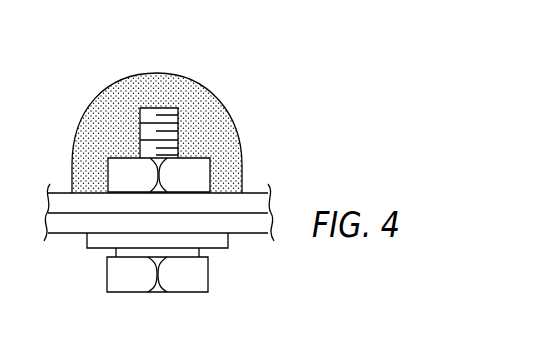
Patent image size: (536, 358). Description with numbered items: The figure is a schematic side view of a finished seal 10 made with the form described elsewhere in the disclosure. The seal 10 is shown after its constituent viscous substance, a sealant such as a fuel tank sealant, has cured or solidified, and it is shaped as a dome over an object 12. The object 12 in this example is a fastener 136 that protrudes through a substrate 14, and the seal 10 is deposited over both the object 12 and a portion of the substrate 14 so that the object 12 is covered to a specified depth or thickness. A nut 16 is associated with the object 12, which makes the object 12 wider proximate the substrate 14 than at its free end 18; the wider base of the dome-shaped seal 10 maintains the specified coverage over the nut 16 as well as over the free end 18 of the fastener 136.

The seal 10 is at (174, 160).
The object 12 is at (197, 118).
The substrate 14 is at (258, 191).
The nut 16 is at (127, 175).
The free end 18 is at (148, 118).
The fastener 136 is at (185, 138).